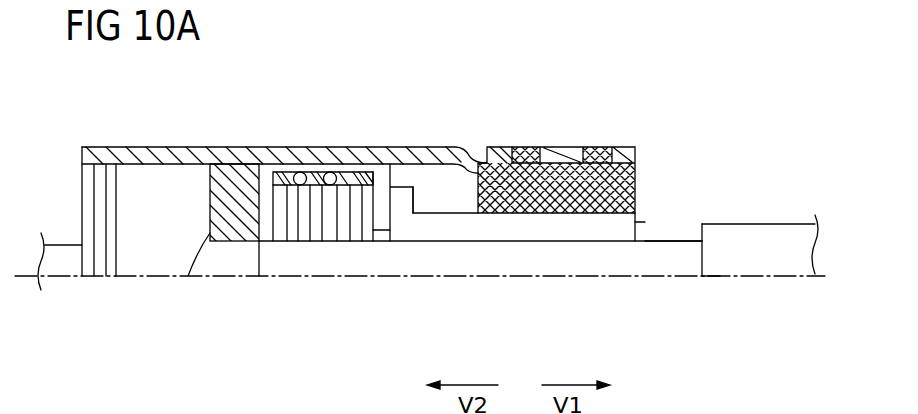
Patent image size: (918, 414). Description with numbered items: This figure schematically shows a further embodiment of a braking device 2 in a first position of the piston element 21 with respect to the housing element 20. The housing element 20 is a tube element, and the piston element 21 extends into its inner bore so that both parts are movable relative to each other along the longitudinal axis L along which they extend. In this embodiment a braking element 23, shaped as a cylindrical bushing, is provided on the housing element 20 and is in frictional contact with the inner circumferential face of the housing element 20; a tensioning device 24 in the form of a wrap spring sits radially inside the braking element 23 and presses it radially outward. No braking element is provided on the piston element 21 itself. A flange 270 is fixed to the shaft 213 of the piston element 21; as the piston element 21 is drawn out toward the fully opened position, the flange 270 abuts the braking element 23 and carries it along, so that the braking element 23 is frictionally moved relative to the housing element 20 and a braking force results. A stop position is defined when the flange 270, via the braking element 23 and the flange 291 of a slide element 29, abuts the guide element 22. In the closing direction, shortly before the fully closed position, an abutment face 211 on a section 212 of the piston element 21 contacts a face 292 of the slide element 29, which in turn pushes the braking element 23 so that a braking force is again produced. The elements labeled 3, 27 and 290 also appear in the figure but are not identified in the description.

The braking device 2 is at (534, 97).
The housing element 20 is at (451, 146).
The insert 3 is at (433, 146).
The flange of the slide element 291 is at (403, 210).
The guide element 22 is at (621, 182).
The flange 270 is at (218, 178).
The sleeve 27 is at (238, 228).
The tensioning device 24 is at (331, 221).
The braking element 23 is at (380, 174).
The slide element 29 is at (460, 228).
The sleeve section 290 is at (538, 230).
The face of the slide element 292 is at (645, 223).
The piston element 21 is at (660, 265).
The abutment face 211 is at (702, 228).
The section of the piston element 212 is at (790, 238).
The shaft of the piston element 213 is at (688, 258).
The longitudinal axis L is at (24, 278).